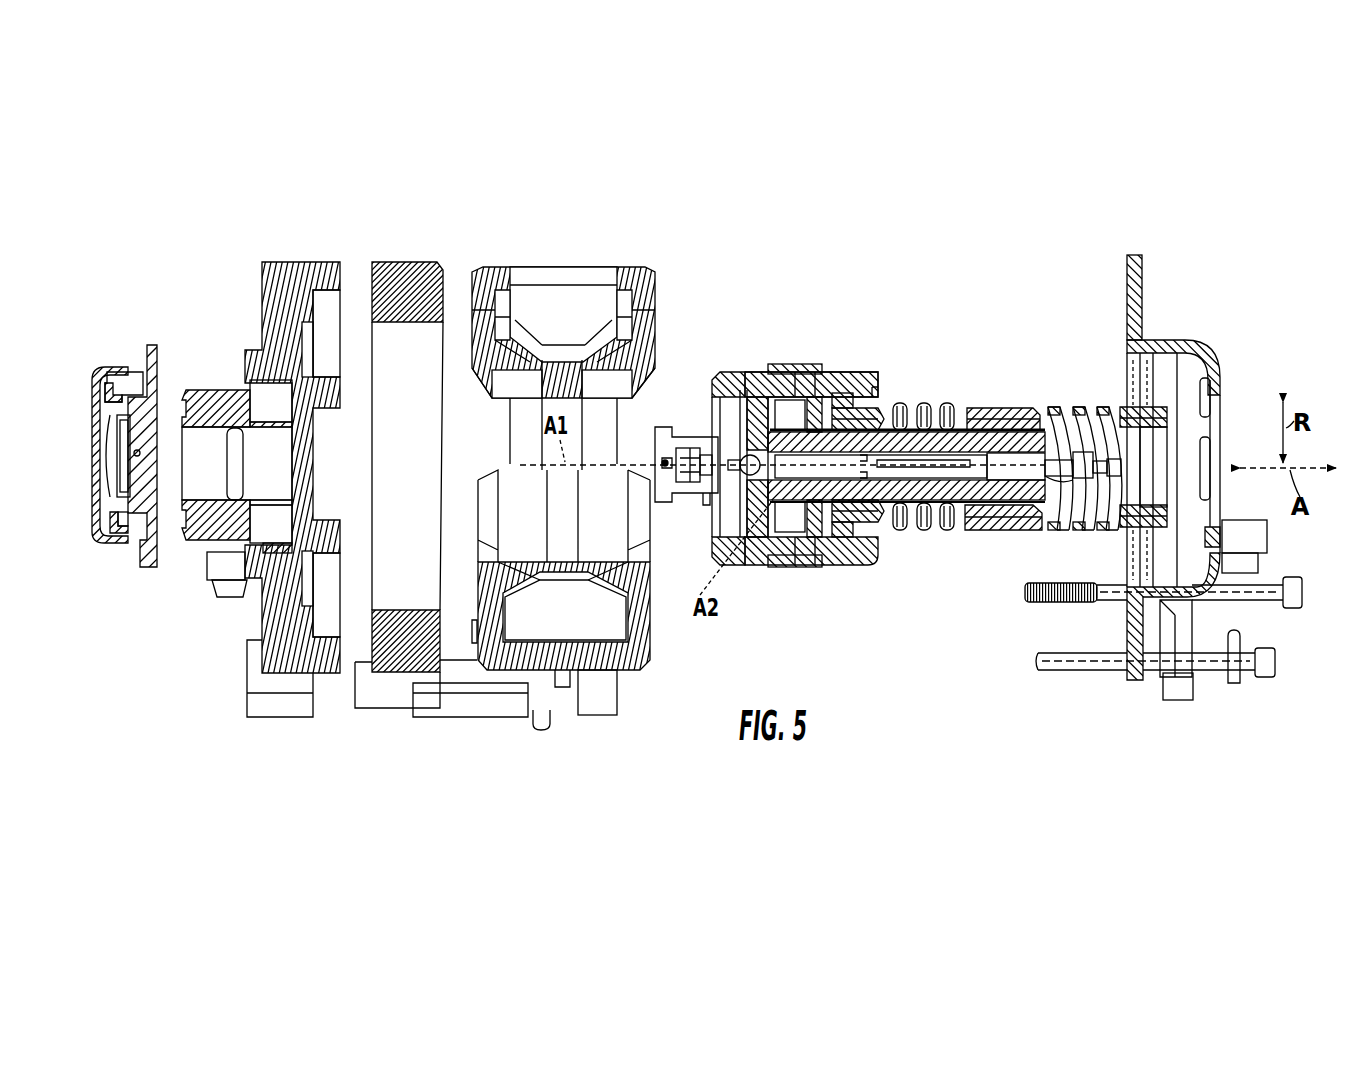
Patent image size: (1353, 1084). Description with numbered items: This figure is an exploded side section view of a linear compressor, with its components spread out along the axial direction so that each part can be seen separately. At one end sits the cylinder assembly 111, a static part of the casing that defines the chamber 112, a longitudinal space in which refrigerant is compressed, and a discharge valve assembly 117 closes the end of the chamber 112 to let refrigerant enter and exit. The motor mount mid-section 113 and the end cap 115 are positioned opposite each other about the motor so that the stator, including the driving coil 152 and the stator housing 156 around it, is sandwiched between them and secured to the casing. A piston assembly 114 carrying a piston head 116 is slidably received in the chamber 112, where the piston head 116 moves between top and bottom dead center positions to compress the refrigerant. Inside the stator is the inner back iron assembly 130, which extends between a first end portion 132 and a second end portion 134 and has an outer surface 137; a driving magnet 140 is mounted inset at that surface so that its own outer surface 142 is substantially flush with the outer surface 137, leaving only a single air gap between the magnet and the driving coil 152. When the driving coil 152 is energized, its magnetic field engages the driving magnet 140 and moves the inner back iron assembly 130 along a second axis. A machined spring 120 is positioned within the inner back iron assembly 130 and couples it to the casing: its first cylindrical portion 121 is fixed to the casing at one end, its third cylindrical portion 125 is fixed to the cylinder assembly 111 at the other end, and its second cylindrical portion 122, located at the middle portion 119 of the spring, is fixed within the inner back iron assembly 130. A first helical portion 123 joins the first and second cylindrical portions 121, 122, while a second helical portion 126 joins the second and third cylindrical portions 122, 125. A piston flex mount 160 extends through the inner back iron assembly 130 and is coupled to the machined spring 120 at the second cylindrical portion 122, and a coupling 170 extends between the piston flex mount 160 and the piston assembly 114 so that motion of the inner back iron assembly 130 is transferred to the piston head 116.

The cylinder assembly 111 is at (277, 603).
The chamber 112 is at (200, 462).
The motor mount mid-section 113 is at (393, 663).
The piston assembly 114 is at (693, 505).
The end cap 115 is at (1195, 337).
The piston head 116 is at (662, 463).
The discharge valve assembly 117 is at (125, 368).
The middle portion 119 is at (1000, 400).
The machined spring 120 is at (1034, 407).
The first cylindrical portion 121 is at (1128, 408).
The second cylindrical portion 122 is at (975, 540).
The first helical portion 123 is at (1079, 407).
The third cylindrical portion 125 is at (880, 408).
The second helical portion 126 is at (925, 405).
The inner back iron assembly 130 is at (838, 567).
The first end portion 132 is at (882, 366).
The second end portion 134 is at (717, 366).
The outer surface 137 is at (850, 364).
The driving magnet 140 is at (780, 364).
The outer surface 142 is at (805, 363).
The driving coil 152 is at (566, 303).
The stator housing 156 is at (652, 272).
The piston flex mount 160 is at (1030, 470).
The coupling 170 is at (1060, 478).